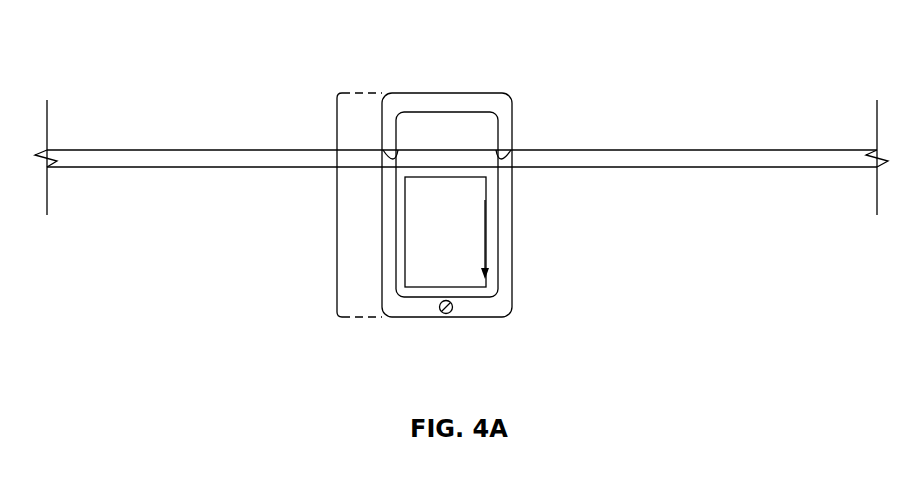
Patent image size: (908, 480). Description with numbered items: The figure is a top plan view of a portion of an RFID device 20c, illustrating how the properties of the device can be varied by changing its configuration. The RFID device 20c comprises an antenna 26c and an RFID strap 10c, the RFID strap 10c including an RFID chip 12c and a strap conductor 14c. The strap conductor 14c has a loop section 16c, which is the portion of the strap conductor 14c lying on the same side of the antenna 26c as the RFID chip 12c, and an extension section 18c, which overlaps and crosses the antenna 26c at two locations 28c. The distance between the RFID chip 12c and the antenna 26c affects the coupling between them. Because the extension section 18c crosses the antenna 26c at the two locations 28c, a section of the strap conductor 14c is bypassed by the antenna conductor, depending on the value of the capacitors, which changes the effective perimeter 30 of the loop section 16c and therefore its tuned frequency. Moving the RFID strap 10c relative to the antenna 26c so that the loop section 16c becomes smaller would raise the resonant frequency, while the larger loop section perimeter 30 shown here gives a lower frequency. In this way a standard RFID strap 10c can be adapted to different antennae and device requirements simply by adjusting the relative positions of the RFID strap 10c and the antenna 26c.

The RFID device 20c is at (665, 61).
The antenna 26c is at (783, 150).
The extension section 18c is at (337, 133).
The loop section 16c is at (337, 243).
The RFID strap 10c is at (495, 327).
The strap conductor 14c is at (520, 290).
The locations 28c is at (399, 156).
The effective perimeter 30 is at (485, 200).
The RFID chip 12c is at (445, 315).